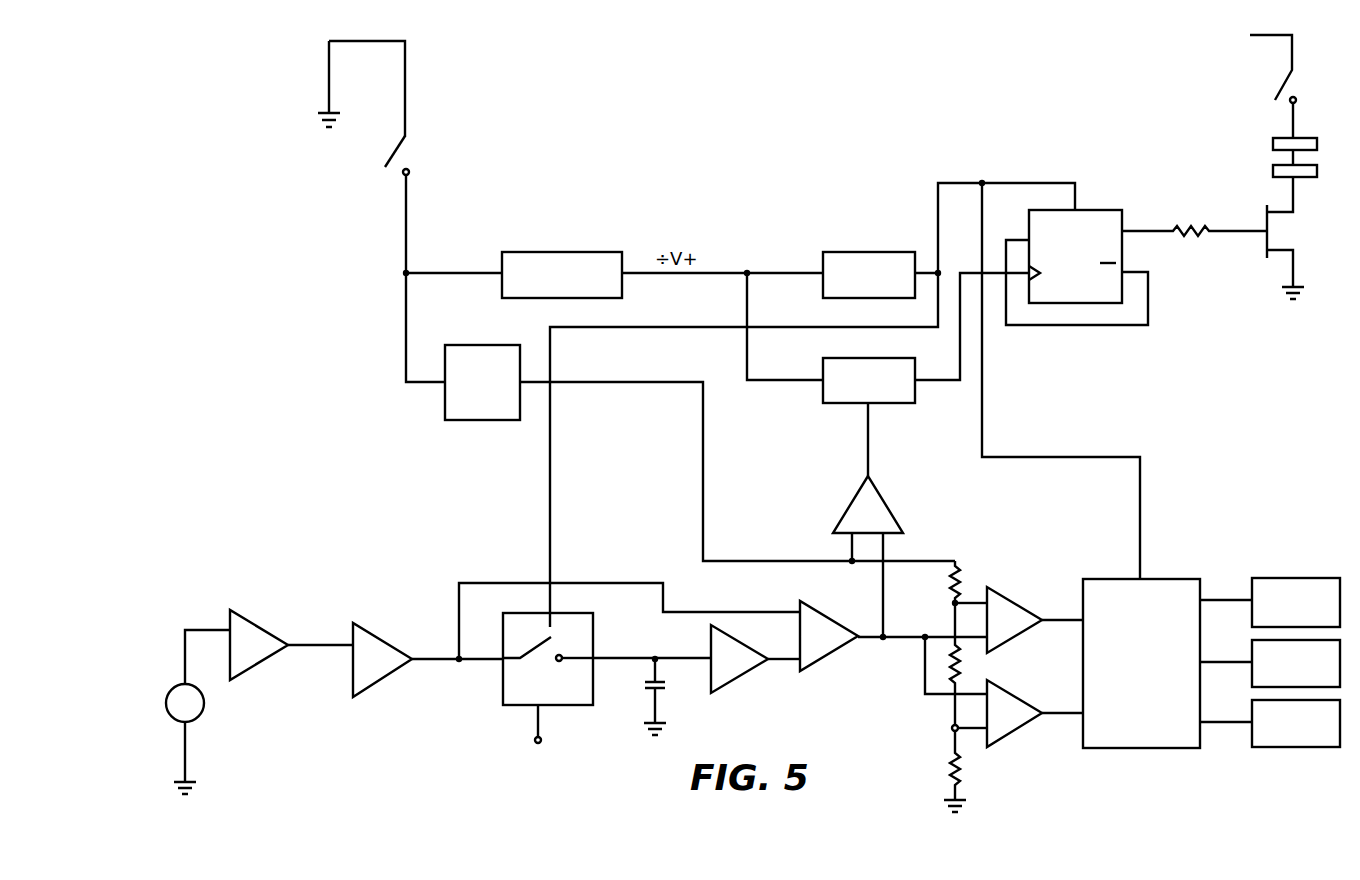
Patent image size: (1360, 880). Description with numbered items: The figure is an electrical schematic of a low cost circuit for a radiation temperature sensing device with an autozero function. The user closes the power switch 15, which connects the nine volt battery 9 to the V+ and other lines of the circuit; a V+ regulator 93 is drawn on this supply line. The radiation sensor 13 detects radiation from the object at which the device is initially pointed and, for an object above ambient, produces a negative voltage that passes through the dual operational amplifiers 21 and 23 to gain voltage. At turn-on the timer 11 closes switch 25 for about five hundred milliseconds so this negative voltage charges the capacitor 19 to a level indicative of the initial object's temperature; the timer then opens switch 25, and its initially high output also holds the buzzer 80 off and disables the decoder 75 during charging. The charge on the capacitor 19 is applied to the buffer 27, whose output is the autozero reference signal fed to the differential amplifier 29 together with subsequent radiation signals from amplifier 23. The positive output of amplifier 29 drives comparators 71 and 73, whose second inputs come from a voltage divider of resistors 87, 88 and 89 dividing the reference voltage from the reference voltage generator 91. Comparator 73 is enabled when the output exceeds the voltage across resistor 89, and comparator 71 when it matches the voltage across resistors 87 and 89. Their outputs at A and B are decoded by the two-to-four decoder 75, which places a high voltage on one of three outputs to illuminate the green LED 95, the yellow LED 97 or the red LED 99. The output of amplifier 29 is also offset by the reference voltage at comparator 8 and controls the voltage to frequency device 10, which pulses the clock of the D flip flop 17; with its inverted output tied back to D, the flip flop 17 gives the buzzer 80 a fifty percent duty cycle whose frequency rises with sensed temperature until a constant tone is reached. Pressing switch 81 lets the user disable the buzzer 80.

The comparator 8 is at (892, 510).
The battery 9 is at (310, 120).
The voltage to frequency device 10 is at (897, 404).
The timer 11 is at (846, 250).
The radiation sensor 13 is at (200, 717).
The power switch 15 is at (397, 148).
The D flip flop 17 is at (1095, 212).
The capacitor 19 is at (636, 690).
The operational amplifier 21 is at (274, 630).
The operational amplifier 23 is at (391, 641).
The switch 25 is at (531, 652).
The buffer 27 is at (740, 680).
The differential amplifier 29 is at (833, 652).
The comparator 71 is at (1015, 607).
The comparator 73 is at (1020, 730).
The 2 to 4 decoder 75 is at (1172, 578).
The buzzer 80 is at (1270, 158).
The switch 81 is at (1285, 78).
The resistor 87 is at (950, 592).
The resistor 88 is at (960, 667).
The resistor 89 is at (948, 758).
The reference voltage generator 91 is at (441, 400).
The voltage regulator 93 is at (563, 251).
The green LED 95 is at (1258, 577).
The yellow LED 97 is at (1252, 646).
The red LED 99 is at (1252, 706).